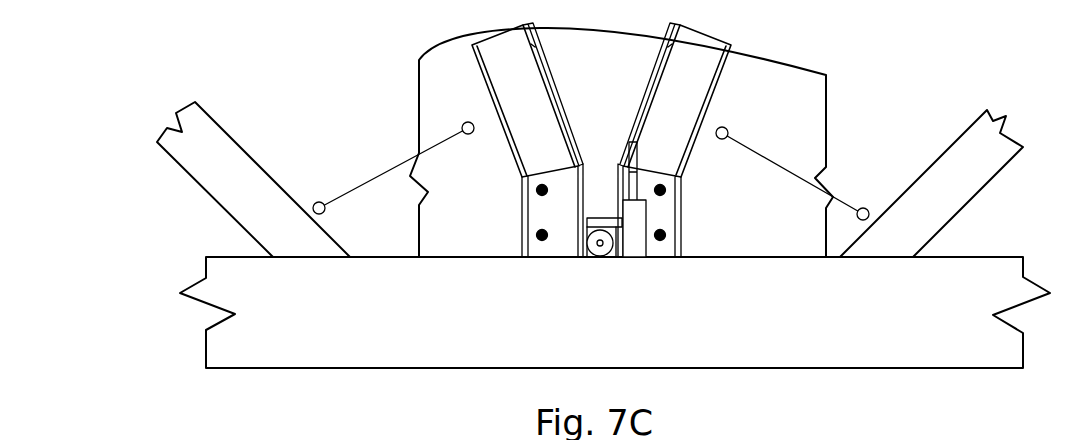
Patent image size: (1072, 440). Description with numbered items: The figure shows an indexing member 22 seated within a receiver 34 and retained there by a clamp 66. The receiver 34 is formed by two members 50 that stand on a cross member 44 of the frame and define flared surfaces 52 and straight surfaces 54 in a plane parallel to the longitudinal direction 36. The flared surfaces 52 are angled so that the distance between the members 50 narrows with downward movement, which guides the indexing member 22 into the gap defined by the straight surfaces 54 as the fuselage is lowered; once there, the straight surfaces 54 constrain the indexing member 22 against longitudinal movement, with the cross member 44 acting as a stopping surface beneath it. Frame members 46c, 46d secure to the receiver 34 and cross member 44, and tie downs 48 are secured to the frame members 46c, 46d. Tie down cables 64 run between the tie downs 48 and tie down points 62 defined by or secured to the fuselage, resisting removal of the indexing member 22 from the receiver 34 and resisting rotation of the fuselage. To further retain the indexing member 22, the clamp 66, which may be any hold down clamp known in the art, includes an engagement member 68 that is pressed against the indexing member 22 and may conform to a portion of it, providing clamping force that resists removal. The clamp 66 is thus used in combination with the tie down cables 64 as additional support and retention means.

The indexing member 22 is at (598, 258).
The receiver 34 is at (703, 182).
The longitudinal direction 36 is at (793, 113).
The cross member 44 is at (482, 324).
The frame member 46c is at (195, 141).
The frame member 46d is at (982, 128).
The tie down 48 is at (325, 211).
The member 50 is at (507, 112).
The flared surface 52 is at (640, 120).
The straight surface 54 is at (614, 200).
The tie down point 62 is at (462, 124).
The tie down cable 64 is at (372, 180).
The clamp 66 is at (652, 220).
The engagement member 68 is at (593, 228).